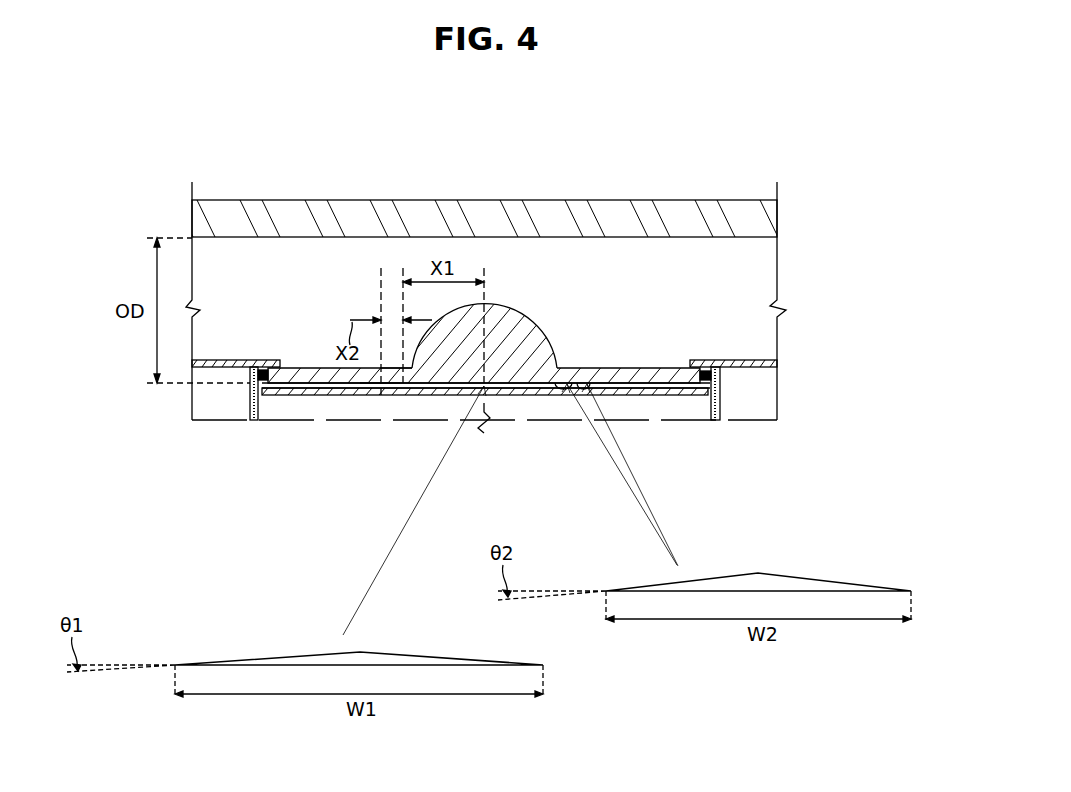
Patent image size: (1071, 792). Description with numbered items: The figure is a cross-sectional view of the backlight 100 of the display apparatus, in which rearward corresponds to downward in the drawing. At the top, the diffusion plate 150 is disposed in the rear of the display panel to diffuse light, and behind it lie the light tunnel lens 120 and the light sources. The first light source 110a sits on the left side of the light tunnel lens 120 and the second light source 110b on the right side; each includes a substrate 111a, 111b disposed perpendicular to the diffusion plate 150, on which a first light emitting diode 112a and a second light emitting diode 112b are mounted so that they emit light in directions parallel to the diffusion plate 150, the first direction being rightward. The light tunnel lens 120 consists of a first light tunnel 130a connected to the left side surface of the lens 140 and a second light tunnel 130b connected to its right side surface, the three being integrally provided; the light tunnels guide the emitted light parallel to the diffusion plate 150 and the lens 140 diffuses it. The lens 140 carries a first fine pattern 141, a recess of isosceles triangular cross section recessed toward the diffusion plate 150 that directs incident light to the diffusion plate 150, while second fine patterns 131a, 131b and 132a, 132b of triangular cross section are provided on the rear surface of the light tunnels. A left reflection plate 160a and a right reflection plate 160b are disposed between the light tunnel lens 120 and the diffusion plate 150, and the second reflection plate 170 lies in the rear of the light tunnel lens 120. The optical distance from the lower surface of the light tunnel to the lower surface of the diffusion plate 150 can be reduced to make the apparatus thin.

The backlight 100 is at (494, 156).
The diffusion plate 150 is at (690, 205).
The left reflection plate 160a is at (226, 358).
The right reflection plate 160b is at (740, 358).
The first light source 110a is at (257, 431).
The second light source 110b is at (742, 431).
The substrate 111a is at (252, 406).
The substrate 111b is at (719, 406).
The first light emitting diode 112a is at (263, 390).
The second light emitting diode 112b is at (704, 418).
The first light tunnel 130a is at (294, 368).
The second light tunnel 130b is at (660, 368).
The second fine pattern 131a is at (380, 395).
The second fine pattern 132a is at (400, 385).
The second fine pattern 131b is at (560, 379).
The second fine pattern 132b is at (583, 381).
The light tunnel lens 120 is at (544, 307).
The lens 140 is at (512, 320).
The first fine pattern 141 is at (490, 387).
The second reflection plate 170 is at (537, 395).